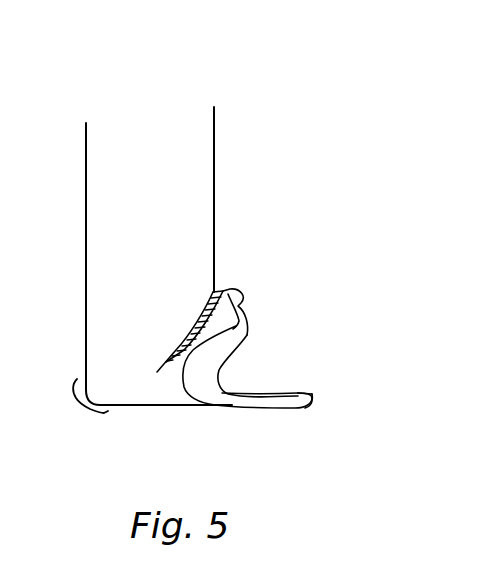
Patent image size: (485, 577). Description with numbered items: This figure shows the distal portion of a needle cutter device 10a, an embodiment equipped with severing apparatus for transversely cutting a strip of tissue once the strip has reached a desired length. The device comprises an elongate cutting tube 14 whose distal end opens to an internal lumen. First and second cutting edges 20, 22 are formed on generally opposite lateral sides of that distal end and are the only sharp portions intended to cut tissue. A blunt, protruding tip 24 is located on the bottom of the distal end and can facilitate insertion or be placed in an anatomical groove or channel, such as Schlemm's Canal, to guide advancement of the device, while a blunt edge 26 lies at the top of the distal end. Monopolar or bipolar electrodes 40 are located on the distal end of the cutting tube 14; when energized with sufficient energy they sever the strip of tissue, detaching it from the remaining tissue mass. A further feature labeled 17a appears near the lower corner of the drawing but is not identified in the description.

The needle cutter device 10a is at (228, 145).
The cutting tube 14 is at (200, 207).
The blunt edge 26 is at (238, 297).
The first cutting edge 20 is at (248, 356).
The second cutting edge 22 is at (222, 393).
The electrode 40 is at (298, 393).
The blunt protruding tip 24 is at (310, 397).
The pull tab 17a is at (77, 410).